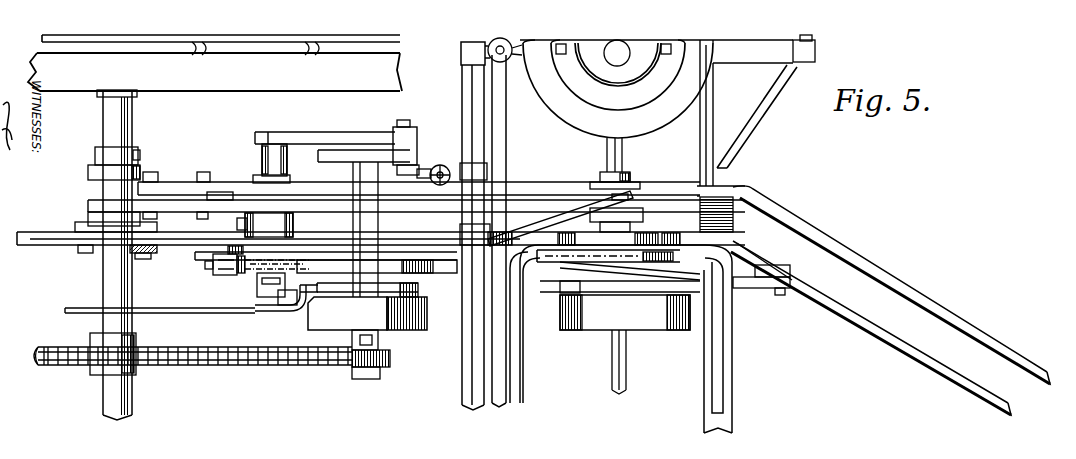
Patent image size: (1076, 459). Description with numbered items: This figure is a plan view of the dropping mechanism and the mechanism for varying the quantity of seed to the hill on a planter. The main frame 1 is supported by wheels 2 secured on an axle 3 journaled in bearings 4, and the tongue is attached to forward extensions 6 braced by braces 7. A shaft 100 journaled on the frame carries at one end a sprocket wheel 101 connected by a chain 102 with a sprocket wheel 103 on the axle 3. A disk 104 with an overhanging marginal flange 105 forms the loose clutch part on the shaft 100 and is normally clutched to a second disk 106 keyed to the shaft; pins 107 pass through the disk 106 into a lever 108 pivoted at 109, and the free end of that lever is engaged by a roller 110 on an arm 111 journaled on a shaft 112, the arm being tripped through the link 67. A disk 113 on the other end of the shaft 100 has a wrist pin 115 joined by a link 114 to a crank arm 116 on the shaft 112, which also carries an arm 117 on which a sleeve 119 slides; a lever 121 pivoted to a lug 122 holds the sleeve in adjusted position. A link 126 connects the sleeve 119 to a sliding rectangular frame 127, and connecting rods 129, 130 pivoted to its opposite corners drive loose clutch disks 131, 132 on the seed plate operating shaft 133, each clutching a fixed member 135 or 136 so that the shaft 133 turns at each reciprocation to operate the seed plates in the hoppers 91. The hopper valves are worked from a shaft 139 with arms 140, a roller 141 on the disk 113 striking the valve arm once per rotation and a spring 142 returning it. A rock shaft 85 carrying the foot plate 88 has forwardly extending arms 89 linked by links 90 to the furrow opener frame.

The main frame 1 is at (55, 245).
The wheels 2 is at (210, 83).
The axle 3 is at (104, 262).
The bearings 4 is at (75, 228).
The forward extensions 6 is at (197, 243).
The braces 7 is at (890, 276).
The link 67 is at (202, 311).
The rock shaft 85 is at (468, 372).
The foot plate 88 is at (460, 237).
The forwardly extending arm 89 is at (528, 221).
The link 90 is at (617, 194).
The container or hopper 91 is at (679, 115).
The shaft 100 is at (371, 376).
The sprocket wheel 101 is at (391, 360).
The chain 102 is at (265, 364).
The sprocket wheel 103 is at (36, 363).
The disk 104 is at (383, 347).
The overhanging marginal flange 105 is at (432, 319).
The second disk 106 is at (424, 303).
The pins 107 is at (407, 263).
The lever 108 is at (343, 251).
The pivot 109 is at (382, 259).
The roller 110 is at (262, 297).
The arm 111 is at (272, 300).
The shaft 112 is at (258, 282).
The disk 113 is at (414, 146).
The link 114 is at (343, 140).
The wrist pin 115 is at (411, 114).
The crank arm 116 is at (263, 148).
The arm 117 is at (309, 317).
The sleeve 119 is at (298, 245).
The lever 121 is at (213, 258).
The lug 122 is at (210, 272).
The link 126 is at (412, 273).
The sliding frame 127 is at (775, 251).
The connecting rod 129 is at (760, 291).
The connecting rod 130 is at (440, 165).
The disk 131 is at (575, 289).
The disk 132 is at (732, 243).
The seed plate operating shaft 133 is at (627, 352).
The fixed clutch member 135 is at (648, 338).
The fixed clutch member 136 is at (645, 233).
The shaft 139 is at (466, 92).
The arms 140 is at (466, 76).
The roller 141 is at (417, 179).
The spring 142 is at (488, 173).